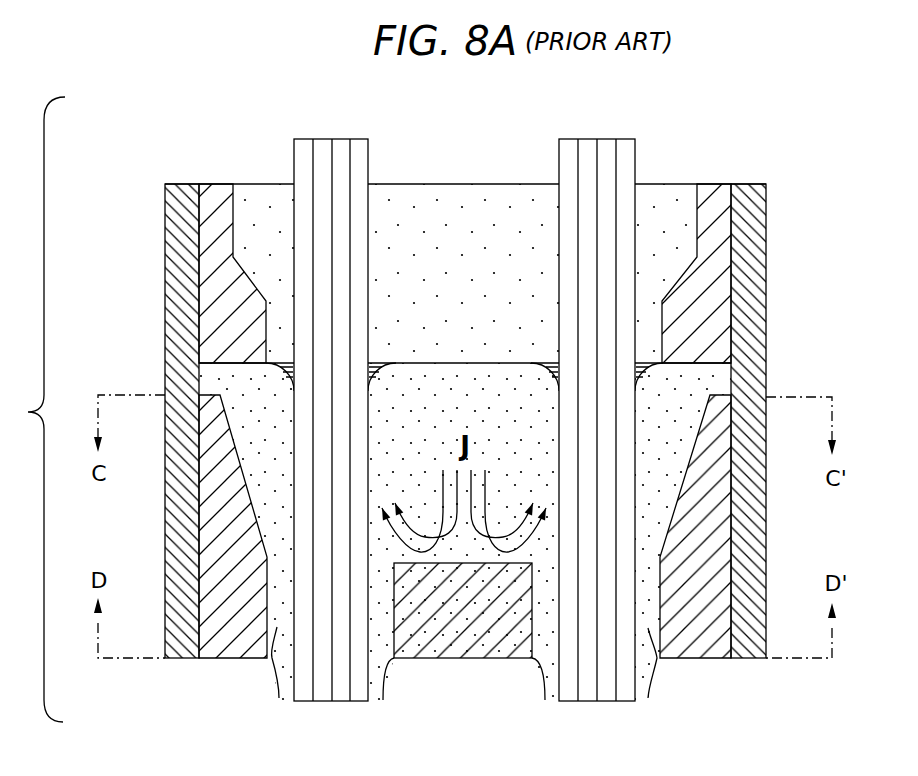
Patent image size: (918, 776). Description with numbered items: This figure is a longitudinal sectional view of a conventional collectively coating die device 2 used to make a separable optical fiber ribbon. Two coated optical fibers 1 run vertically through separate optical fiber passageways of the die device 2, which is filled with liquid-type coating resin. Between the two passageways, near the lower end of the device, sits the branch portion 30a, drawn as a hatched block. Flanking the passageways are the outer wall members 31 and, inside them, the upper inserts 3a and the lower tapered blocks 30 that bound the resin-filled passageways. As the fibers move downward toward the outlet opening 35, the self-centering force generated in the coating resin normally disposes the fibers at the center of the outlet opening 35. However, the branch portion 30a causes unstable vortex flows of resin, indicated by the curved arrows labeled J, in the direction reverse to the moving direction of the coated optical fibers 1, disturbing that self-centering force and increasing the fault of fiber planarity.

The coated optical fibers 1 is at (294, 132).
The collectively coating die device 2 is at (788, 156).
The insert block 3a is at (216, 192).
The tapered block 30 is at (213, 504).
The branch portion 30a is at (465, 645).
The outer wall 31 is at (182, 258).
The outlet opening 35 is at (272, 658).